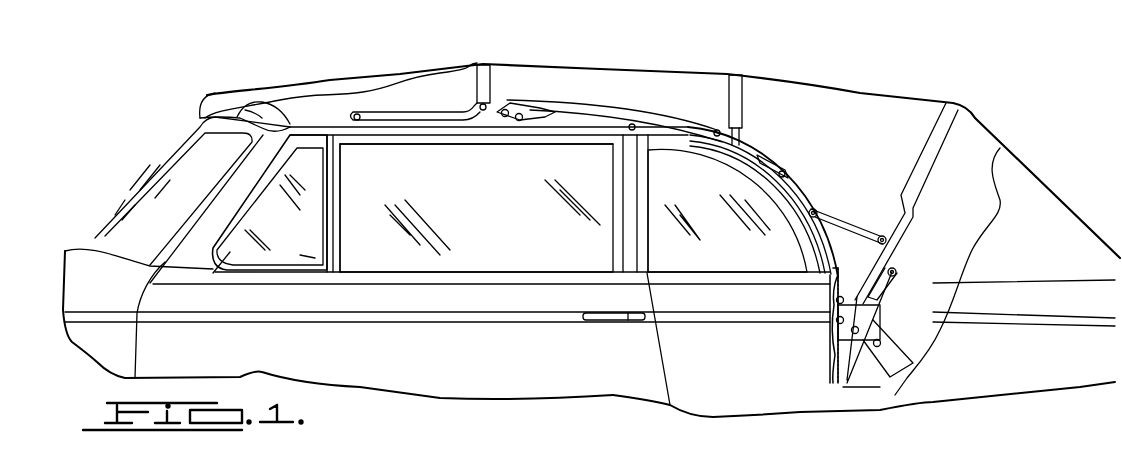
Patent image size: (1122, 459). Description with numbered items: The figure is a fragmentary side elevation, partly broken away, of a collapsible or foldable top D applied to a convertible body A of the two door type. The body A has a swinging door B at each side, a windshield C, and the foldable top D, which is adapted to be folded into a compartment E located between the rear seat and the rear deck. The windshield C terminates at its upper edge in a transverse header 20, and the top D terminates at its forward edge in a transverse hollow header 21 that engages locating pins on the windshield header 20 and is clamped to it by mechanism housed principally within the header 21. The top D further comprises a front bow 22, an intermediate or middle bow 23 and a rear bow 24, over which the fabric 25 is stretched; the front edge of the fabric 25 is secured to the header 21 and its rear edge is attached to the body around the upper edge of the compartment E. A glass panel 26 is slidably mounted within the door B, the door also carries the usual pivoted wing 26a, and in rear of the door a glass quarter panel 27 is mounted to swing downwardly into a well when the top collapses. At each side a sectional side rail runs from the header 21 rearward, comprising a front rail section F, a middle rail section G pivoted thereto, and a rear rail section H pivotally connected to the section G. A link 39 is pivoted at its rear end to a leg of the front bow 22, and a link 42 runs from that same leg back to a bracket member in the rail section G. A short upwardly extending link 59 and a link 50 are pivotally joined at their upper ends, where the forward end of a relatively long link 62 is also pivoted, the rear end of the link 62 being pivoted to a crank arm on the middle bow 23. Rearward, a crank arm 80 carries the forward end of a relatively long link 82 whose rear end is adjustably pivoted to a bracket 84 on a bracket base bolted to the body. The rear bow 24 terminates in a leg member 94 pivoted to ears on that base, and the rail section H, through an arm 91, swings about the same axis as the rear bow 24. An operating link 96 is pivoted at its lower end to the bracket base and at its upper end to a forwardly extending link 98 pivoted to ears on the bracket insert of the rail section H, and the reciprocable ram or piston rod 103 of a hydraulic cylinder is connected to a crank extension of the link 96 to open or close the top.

The transverse header 20 is at (200, 119).
The transverse hollow header 21 is at (265, 115).
The front bow 22 is at (488, 88).
The intermediate or middle bow 23 is at (746, 90).
The rear bow 24 is at (948, 122).
The fabric 25 is at (672, 68).
The glass panel 26 is at (522, 208).
The pivoted wing 26a is at (315, 247).
The glass quarter panel 27 is at (727, 210).
The link 39 is at (427, 113).
The link 42 is at (557, 107).
The link 50 is at (500, 118).
The short upwardly extending link 59 is at (543, 120).
The relatively long link 62 is at (607, 104).
The crank arm 80 is at (768, 162).
The relatively long link 82 is at (806, 194).
The bracket 84 is at (887, 343).
The arm 91 is at (840, 267).
The leg member 94 is at (903, 223).
The operating link 96 is at (868, 298).
The forwardly extending link 98 is at (850, 222).
The reciprocable ram or piston rod 103 is at (860, 380).
The convertible body A is at (802, 398).
The swinging door B is at (508, 392).
The windshield C is at (175, 152).
The collapsible or foldable top D is at (592, 66).
The compartment E is at (915, 342).
The front rail section F is at (440, 122).
The middle rail section G is at (593, 130).
The rear rail section H is at (783, 190).